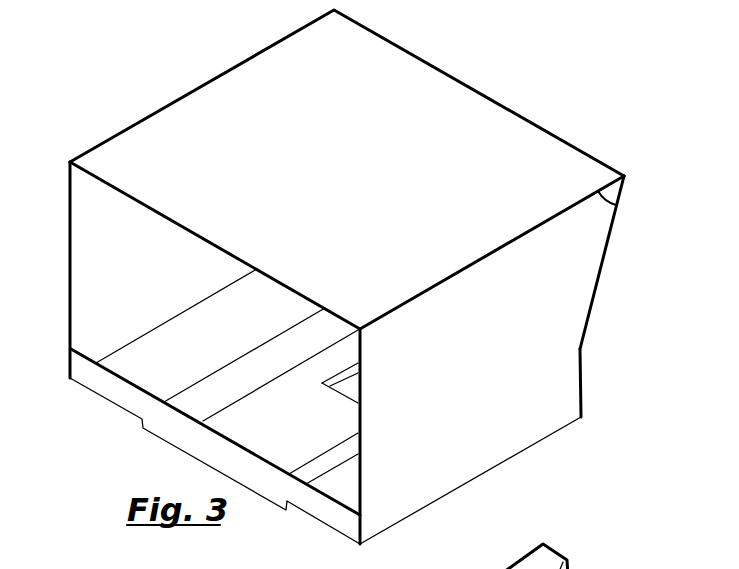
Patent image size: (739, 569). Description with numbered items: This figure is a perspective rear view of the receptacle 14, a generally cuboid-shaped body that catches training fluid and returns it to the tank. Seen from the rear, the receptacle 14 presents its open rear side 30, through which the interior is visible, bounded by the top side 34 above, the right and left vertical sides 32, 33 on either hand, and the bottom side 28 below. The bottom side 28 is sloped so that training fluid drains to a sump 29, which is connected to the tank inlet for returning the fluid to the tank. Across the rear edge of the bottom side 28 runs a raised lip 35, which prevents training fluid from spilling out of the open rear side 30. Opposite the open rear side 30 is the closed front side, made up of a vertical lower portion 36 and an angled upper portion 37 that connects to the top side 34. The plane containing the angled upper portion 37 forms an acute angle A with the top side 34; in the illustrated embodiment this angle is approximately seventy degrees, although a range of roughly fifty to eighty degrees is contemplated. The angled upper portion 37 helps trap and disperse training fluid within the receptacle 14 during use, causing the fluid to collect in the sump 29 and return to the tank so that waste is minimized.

The receptacle 14 is at (355, 289).
The bottom side 28 is at (175, 370).
The sump 29 is at (347, 383).
The open rear side 30 is at (115, 250).
The right vertical side 32 is at (527, 372).
The left vertical side 33 is at (70, 172).
The top side 34 is at (225, 115).
The raised lip 35 is at (273, 480).
The vertical lower portion 36 is at (583, 380).
The angled upper portion 37 is at (597, 292).
The acute angle A is at (600, 205).